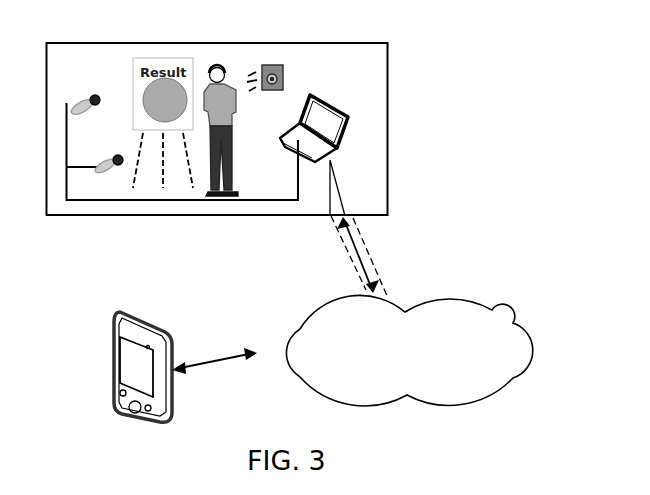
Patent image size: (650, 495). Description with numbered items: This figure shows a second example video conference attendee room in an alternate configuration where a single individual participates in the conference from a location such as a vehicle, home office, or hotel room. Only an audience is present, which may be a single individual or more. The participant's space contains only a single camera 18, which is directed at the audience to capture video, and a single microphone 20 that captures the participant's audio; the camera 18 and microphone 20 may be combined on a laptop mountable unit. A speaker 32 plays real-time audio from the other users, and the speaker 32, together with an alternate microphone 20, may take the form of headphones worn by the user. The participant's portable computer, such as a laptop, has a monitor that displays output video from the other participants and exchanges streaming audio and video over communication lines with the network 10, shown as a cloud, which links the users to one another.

The network 10 is at (490, 307).
The camera 18 is at (75, 91).
The microphone 20 is at (112, 161).
The speaker 32 is at (285, 86).